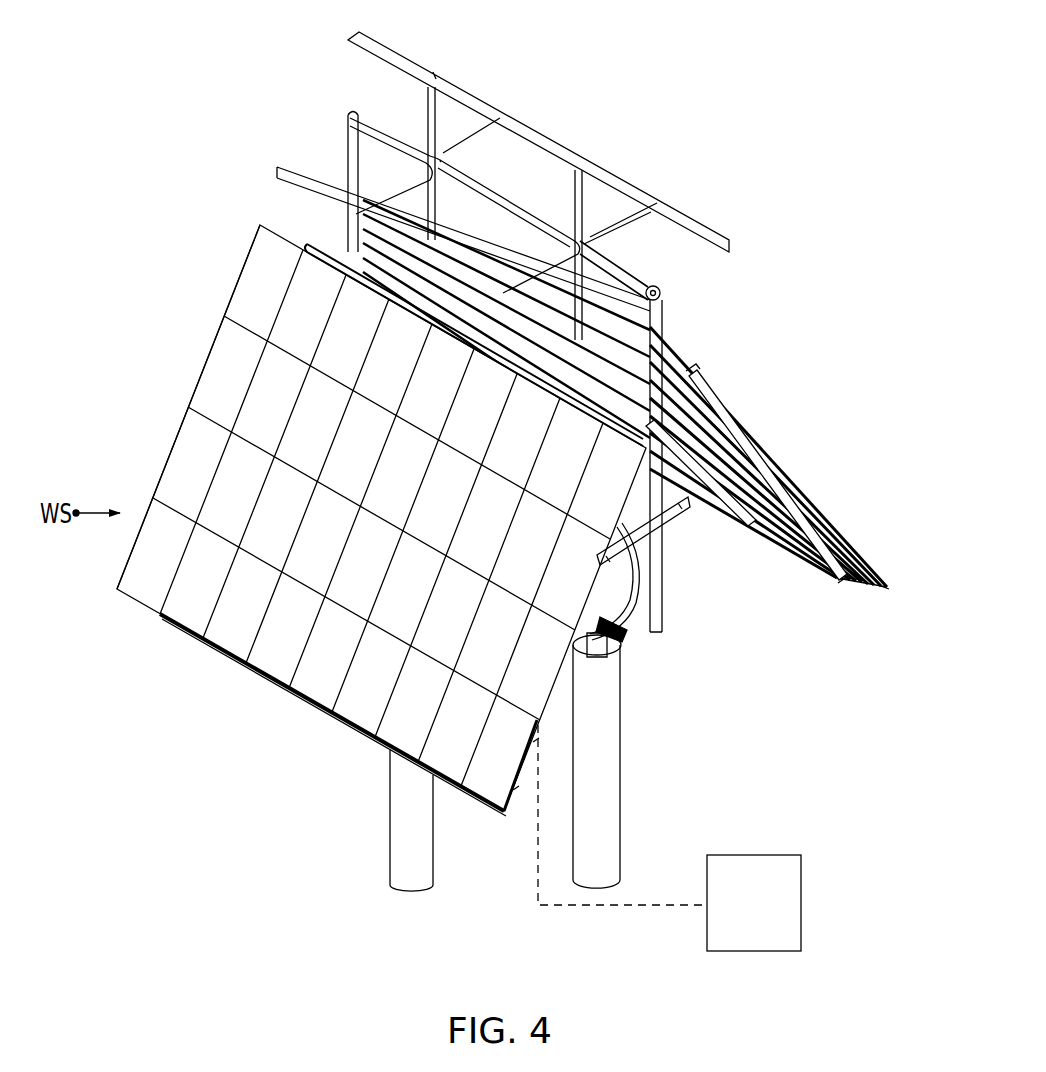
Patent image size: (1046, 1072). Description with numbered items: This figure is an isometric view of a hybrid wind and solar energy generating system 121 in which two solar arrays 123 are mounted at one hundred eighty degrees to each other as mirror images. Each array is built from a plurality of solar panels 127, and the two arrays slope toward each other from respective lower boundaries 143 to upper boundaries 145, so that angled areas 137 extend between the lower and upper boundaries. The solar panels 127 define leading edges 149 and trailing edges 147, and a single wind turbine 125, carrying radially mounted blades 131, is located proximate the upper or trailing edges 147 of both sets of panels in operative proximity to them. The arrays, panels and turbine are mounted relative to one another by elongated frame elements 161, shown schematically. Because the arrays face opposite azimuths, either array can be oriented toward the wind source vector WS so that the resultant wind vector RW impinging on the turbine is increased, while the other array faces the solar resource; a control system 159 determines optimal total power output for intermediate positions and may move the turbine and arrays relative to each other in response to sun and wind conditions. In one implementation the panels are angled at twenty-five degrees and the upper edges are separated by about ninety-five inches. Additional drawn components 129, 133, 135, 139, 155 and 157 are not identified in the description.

The hybrid wind and solar energy generating system 121 is at (255, 100).
The solar arrays 123 is at (172, 355).
The wind turbine 125 is at (722, 212).
The solar panels 127 is at (170, 455).
The pivot bearing 129 is at (668, 297).
The blades 131 is at (676, 206).
The truss tube 133 is at (372, 128).
The panel edge 135 is at (135, 594).
The angled areas 137 is at (800, 400).
The mounting clip 139 is at (277, 216).
The lower boundaries 143 is at (228, 648).
The upper boundaries 145 is at (492, 234).
The trailing edges 147 is at (256, 229).
The leading edges 149 is at (280, 677).
The drive bracket 155 is at (622, 618).
The rail flange 157 is at (352, 725).
The control system 159 is at (669, 838).
The elongated frame elements 161 is at (668, 527).